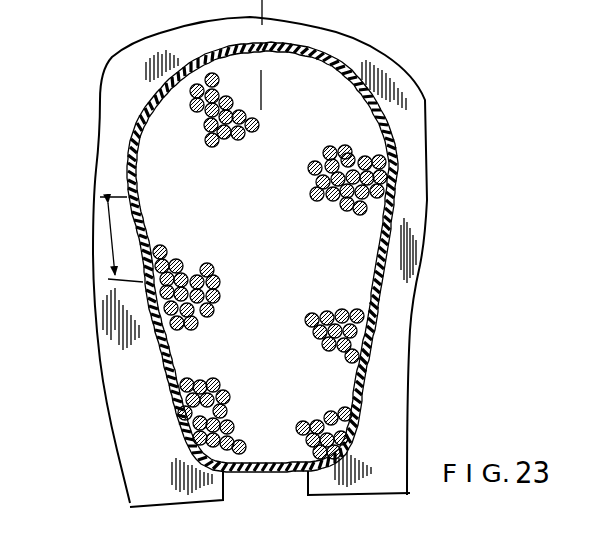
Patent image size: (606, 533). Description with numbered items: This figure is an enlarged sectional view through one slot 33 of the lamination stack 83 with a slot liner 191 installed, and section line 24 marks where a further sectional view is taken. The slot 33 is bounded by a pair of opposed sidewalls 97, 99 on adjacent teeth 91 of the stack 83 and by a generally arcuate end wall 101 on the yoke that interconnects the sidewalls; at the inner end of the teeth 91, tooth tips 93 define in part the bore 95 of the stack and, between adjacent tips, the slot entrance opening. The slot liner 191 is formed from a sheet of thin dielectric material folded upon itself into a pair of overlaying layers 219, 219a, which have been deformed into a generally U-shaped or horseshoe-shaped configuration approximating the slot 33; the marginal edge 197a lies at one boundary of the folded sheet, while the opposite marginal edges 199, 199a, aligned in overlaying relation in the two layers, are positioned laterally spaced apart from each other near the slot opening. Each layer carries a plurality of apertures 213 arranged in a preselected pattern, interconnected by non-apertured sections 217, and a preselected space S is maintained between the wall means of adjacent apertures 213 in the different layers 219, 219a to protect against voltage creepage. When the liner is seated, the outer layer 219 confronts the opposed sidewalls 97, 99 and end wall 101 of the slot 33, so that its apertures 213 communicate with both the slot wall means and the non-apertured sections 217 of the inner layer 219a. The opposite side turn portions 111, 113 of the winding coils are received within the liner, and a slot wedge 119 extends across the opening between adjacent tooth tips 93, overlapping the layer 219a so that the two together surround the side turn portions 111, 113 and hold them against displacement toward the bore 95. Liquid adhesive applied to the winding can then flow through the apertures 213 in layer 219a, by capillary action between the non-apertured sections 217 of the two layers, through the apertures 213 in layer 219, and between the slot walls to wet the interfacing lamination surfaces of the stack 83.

The slot 33 is at (126, 138).
The lamination stack 83 is at (423, 91).
The tooth 91 is at (420, 260).
The tooth tip 93 is at (270, 492).
The bore 95 is at (366, 497).
The slot sidewall 97 is at (168, 418).
The slot sidewall 99 is at (357, 424).
The end wall 101 is at (320, 53).
The side turn portion 111 is at (270, 266).
The side turn portion 113 is at (277, 192).
The slot wedge 119 is at (270, 472).
The slot liner 191 is at (403, 137).
The marginal edge 197a is at (245, 44).
The marginal edge 199 is at (177, 450).
The marginal edge 199a is at (187, 443).
The aperture 213 is at (127, 168).
The non-apertured section 217 is at (383, 235).
The layer 219 is at (143, 66).
The layer 219a is at (377, 113).
The section line 24- 24 is at (255, 100).
The preselected space S is at (108, 237).